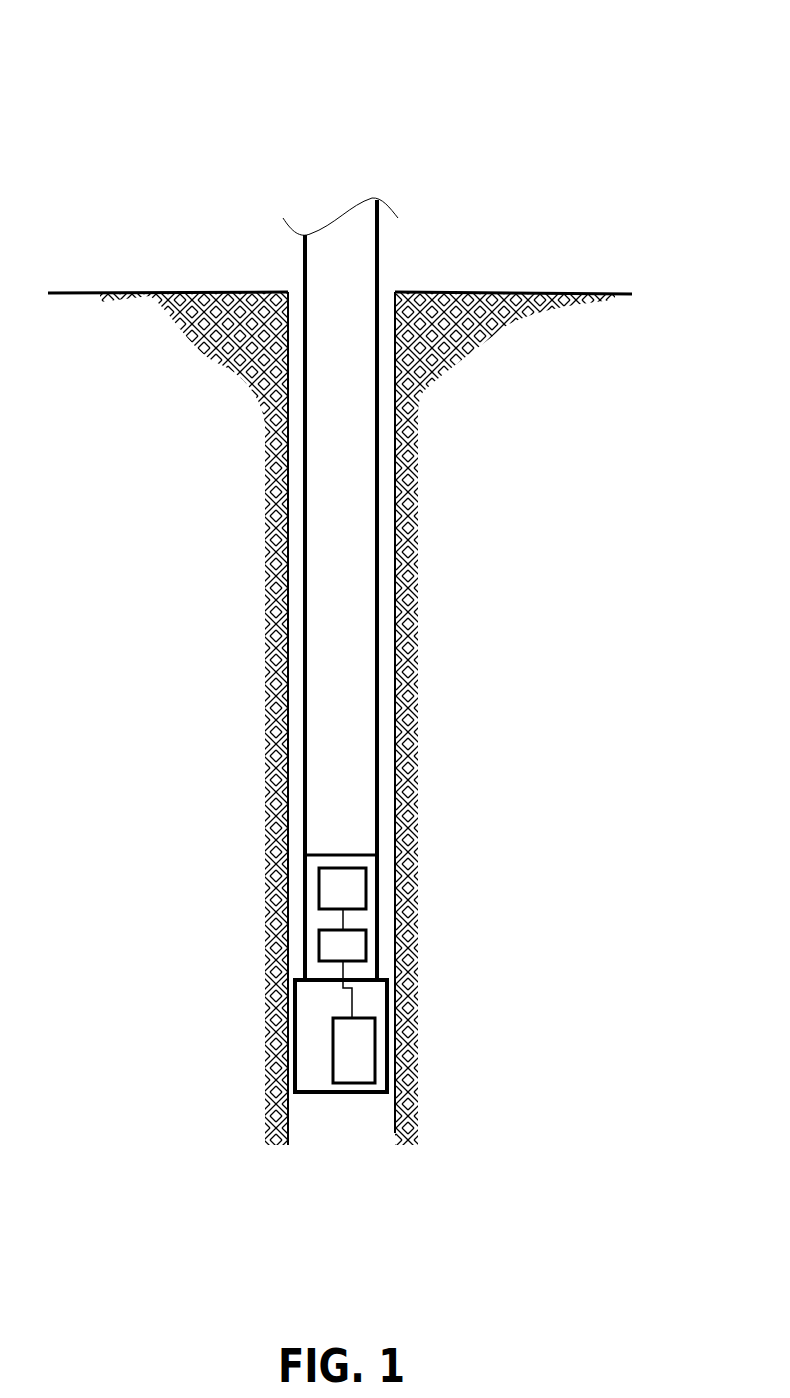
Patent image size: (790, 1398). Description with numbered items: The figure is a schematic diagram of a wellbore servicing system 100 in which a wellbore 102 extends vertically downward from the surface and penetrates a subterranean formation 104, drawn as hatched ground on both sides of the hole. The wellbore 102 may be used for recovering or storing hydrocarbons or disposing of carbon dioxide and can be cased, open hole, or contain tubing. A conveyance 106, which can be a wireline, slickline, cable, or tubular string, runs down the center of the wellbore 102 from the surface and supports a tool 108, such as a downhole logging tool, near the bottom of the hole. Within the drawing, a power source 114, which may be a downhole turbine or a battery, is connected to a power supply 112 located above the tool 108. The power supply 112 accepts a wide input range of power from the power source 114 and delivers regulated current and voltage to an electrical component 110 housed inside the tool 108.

The wellbore servicing system 100 is at (648, 66).
The wellbore 102 is at (388, 460).
The subterranean formation 104 is at (490, 345).
The conveyance 106 is at (305, 748).
The tool 108 is at (307, 1073).
The electrical component 110 is at (370, 1061).
The power supply 112 is at (355, 948).
The power source 114 is at (318, 890).